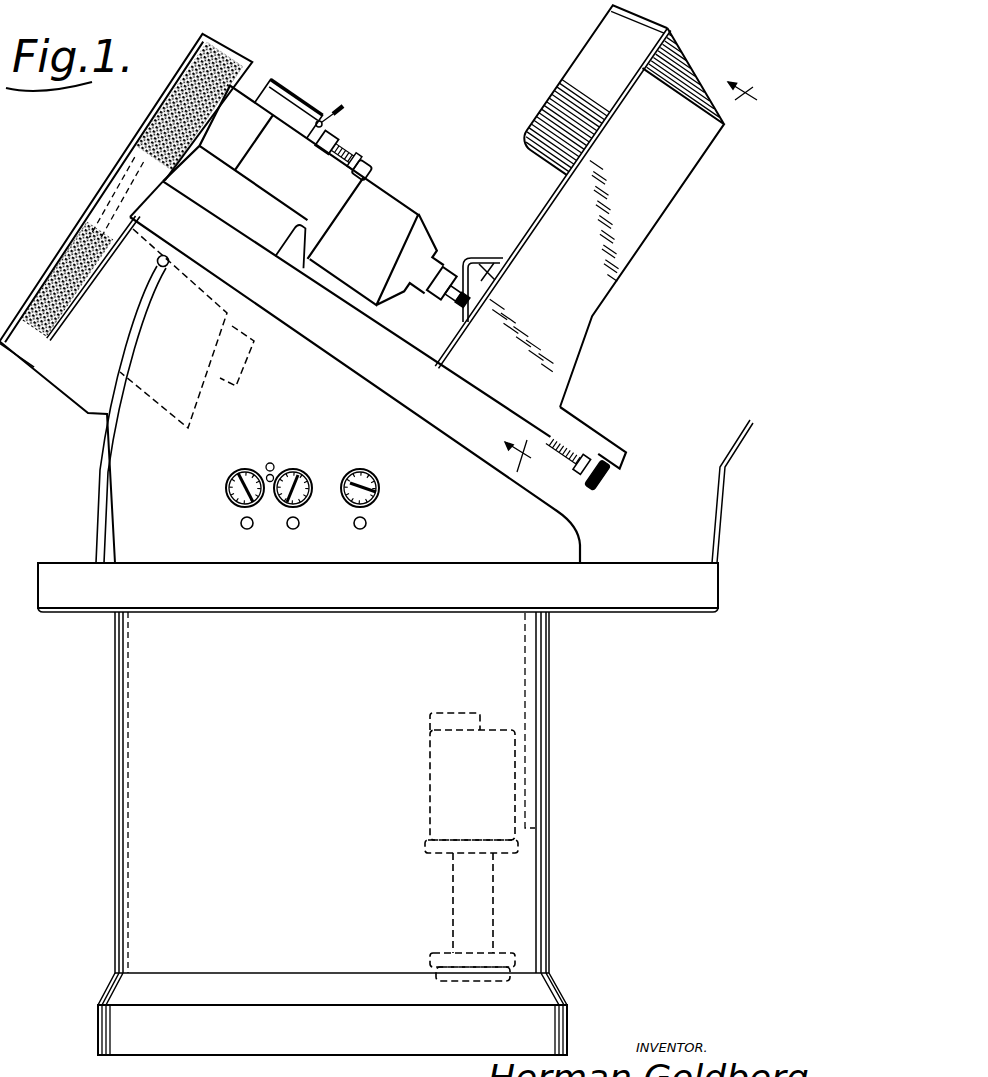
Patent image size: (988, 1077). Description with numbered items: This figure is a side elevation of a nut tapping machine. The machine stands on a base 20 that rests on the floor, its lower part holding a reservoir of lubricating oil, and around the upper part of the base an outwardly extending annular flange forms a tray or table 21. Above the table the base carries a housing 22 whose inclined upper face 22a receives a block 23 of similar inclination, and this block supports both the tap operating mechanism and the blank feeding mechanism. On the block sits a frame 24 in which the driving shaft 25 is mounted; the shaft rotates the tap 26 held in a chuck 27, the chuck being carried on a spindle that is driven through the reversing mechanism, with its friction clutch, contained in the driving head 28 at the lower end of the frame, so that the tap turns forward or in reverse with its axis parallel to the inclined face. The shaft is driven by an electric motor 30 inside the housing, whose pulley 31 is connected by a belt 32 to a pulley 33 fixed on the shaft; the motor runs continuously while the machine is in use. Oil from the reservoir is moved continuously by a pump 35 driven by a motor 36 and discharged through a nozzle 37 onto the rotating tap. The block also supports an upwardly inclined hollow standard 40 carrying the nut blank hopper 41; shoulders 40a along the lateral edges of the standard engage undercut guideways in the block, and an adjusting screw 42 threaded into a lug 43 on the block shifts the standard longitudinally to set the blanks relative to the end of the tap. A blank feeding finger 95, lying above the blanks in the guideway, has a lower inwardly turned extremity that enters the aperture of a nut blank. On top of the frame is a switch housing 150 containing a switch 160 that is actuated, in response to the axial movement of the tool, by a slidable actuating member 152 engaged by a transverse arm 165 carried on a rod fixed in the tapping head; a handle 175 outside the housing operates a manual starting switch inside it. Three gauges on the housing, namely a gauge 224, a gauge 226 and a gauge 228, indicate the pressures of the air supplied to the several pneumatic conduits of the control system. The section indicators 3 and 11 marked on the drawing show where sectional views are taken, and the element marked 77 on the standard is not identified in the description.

The section line 3- 3 is at (758, 80).
The carriage body (section 11-11) 11 is at (409, 133).
The base 20 is at (132, 786).
The tray or table 21 is at (86, 592).
The housing 22 is at (162, 533).
The inclined upper face 22a is at (366, 364).
The block 23 is at (413, 385).
The frame 24 is at (278, 127).
The driving shaft 25 is at (266, 72).
The tap 26 is at (458, 305).
The chuck 27 is at (447, 277).
The driving head 28 is at (384, 201).
The electric motor 30 is at (80, 404).
The pulley 31 is at (62, 258).
The belt 32 is at (112, 181).
The pulley 33 is at (212, 62).
The pump 35 is at (485, 913).
The motor 36 is at (503, 782).
The nozzle 37 is at (470, 256).
The hollow frame or standard 40 is at (618, 242).
The shoulders 40a is at (500, 406).
The nut blank hopper 41 is at (566, 83).
The adjusting screw 42 is at (605, 479).
The lug 43 is at (577, 481).
The container wall 77 is at (545, 194).
The blank feeding finger 95 is at (487, 281).
The switch housing 150 is at (324, 120).
The actuating member 152 is at (358, 150).
The switch 160 is at (352, 172).
The transverse arm 165 is at (322, 152).
The operating handle 175 is at (341, 110).
The gauge 224 is at (297, 470).
The gauge 226 is at (244, 470).
The gauge 228 is at (380, 489).